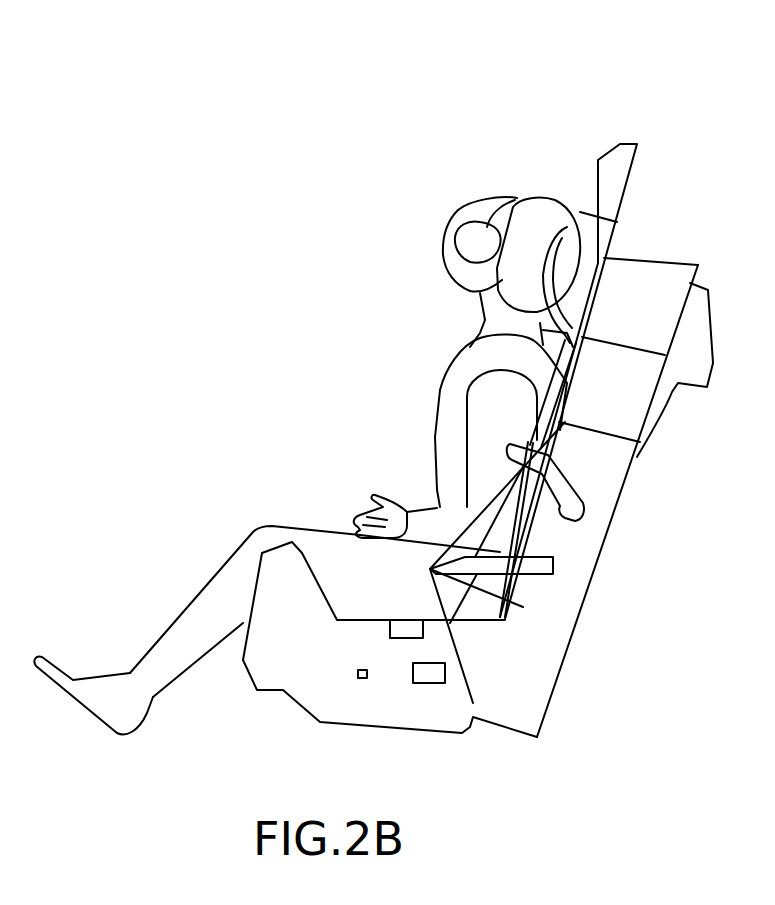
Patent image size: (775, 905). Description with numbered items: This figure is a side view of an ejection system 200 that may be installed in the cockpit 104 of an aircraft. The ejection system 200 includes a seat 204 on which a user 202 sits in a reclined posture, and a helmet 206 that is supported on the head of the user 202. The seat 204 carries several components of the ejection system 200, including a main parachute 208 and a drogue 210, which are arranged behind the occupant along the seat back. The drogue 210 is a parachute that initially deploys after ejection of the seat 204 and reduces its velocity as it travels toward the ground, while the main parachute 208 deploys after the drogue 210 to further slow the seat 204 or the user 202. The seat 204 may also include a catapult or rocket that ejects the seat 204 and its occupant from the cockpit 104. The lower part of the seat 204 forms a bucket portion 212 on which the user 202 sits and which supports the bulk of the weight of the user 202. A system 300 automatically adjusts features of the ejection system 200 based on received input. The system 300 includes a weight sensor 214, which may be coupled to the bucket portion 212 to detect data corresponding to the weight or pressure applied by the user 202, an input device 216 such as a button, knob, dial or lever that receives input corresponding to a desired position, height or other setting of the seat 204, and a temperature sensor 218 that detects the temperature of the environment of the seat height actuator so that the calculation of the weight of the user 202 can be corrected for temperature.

The cockpit 104 is at (452, 132).
The ejection system 200 is at (633, 498).
The user 202 is at (433, 389).
The seat 204 is at (588, 591).
The helmet 206 is at (537, 213).
The main parachute 208 is at (675, 295).
The drogue 210 is at (697, 355).
The bucket portion 212 is at (455, 625).
The weight sensor 214 is at (400, 638).
The input device 216 is at (432, 683).
The temperature sensor 218 is at (358, 677).
The system 300 is at (205, 472).